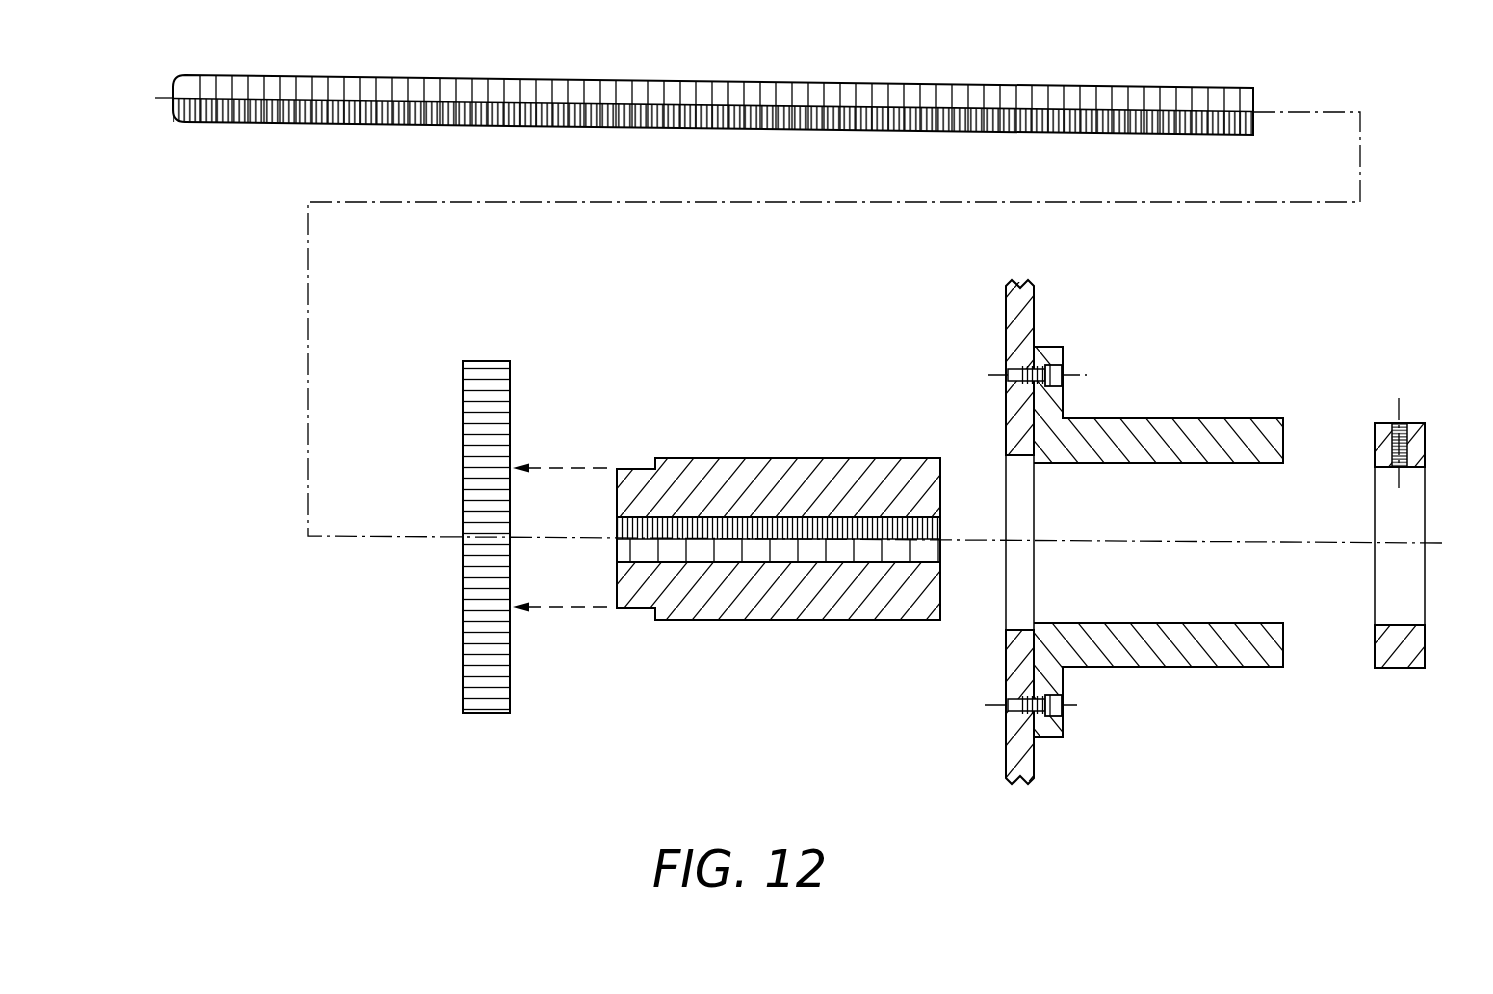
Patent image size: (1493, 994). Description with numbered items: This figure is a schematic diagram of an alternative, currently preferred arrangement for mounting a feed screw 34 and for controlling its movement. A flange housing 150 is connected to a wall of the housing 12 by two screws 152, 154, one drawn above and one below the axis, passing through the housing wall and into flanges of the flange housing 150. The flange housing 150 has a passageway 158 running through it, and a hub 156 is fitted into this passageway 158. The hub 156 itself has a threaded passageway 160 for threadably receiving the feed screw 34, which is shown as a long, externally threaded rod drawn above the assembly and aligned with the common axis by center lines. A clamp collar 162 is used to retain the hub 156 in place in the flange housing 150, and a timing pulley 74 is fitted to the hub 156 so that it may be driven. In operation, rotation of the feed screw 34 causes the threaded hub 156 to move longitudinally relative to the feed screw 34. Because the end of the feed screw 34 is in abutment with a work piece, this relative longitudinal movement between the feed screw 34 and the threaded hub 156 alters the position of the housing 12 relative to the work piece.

The feed screw 34 is at (1140, 88).
The timing pulley 74 is at (470, 680).
The housing 12 is at (1015, 300).
The flange housing 150 is at (1165, 418).
The screw 152 is at (1063, 378).
The screw 154 is at (1065, 705).
The hub 156 is at (768, 458).
The passageway 158 is at (1262, 492).
The threaded passageway 160 is at (625, 527).
The clamp collar 162 is at (1422, 445).